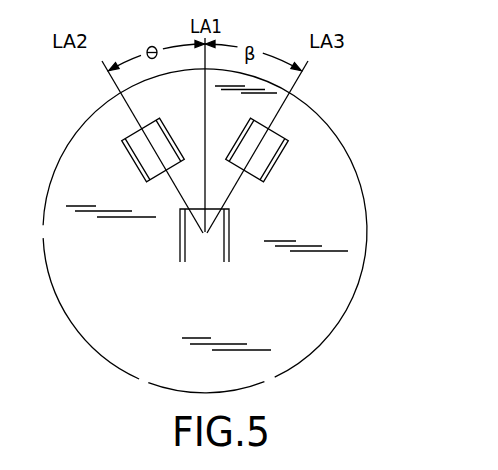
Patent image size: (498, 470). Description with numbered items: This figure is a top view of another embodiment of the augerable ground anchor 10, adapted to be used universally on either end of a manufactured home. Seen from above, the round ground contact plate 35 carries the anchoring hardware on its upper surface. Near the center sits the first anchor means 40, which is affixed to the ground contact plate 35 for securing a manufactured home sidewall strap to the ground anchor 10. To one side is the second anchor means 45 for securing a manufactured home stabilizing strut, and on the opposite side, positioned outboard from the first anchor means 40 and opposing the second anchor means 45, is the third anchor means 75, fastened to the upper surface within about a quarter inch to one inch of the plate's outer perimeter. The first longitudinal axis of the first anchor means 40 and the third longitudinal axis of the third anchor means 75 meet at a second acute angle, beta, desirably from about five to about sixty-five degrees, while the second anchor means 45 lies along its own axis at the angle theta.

The augerable ground anchor 10 is at (461, 466).
The ground contact plate 35 is at (178, 317).
The first anchor means 40 is at (180, 243).
The second anchor means 45 is at (137, 167).
The third anchor means 75 is at (278, 156).